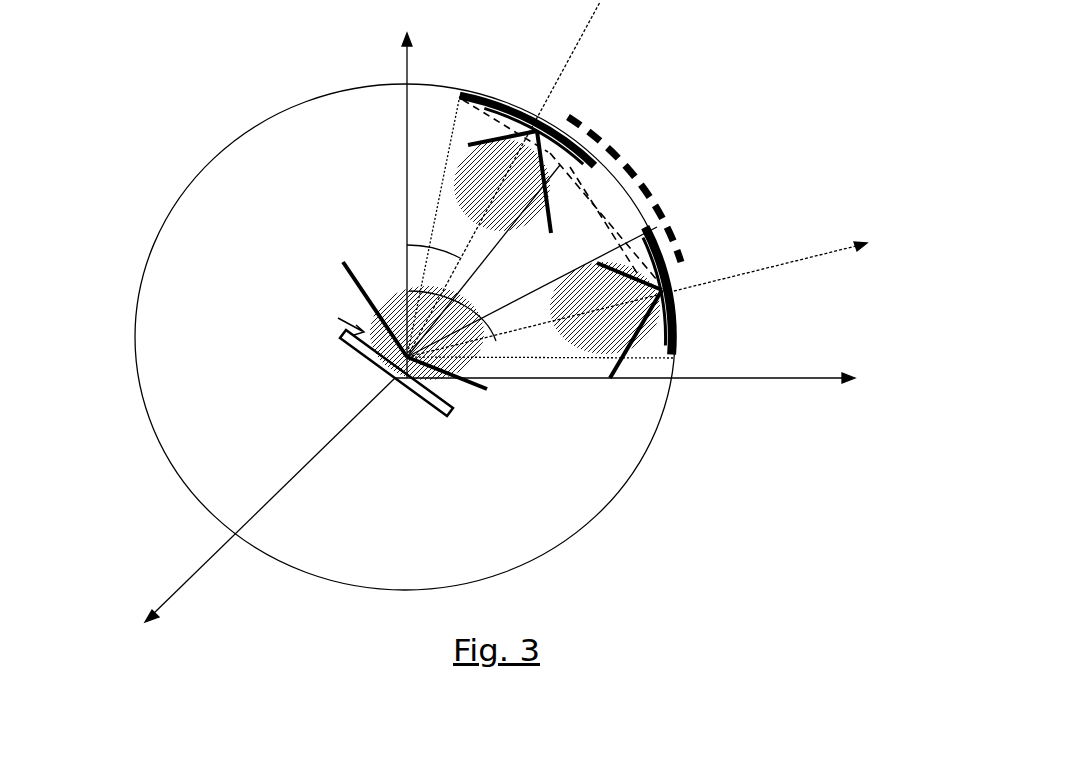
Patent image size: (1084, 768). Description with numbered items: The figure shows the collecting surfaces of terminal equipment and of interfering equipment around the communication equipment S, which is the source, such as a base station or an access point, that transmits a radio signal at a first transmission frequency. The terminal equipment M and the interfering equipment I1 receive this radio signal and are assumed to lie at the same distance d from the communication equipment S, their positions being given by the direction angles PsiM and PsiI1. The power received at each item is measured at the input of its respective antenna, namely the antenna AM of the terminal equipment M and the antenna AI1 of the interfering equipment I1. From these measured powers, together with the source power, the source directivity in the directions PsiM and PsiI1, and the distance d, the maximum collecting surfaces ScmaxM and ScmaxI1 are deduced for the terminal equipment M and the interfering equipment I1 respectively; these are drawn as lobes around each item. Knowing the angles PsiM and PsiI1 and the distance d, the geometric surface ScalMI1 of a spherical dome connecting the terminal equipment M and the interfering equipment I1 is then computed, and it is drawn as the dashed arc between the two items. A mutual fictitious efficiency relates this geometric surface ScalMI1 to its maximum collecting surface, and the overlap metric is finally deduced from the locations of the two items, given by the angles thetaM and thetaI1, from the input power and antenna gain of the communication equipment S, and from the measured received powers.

The communication equipment S is at (395, 339).
The terminal equipment M is at (531, 153).
The interfering equipment I1 is at (662, 289).
The distance d is at (590, 216).
The antenna of terminal equipment M AM is at (475, 147).
The antenna of interfering equipment I1 AI1 is at (607, 350).
The maximum collecting surface of terminal equipment M ScmaxM is at (460, 99).
The maximum collecting surface of interfering equipment I1 ScmaxI1 is at (673, 350).
The geometric surface of spherical dome ScalMI1 is at (648, 178).
The angle of terminal equipment M thetaM is at (433, 231).
The angle of interfering equipment I1 thetaI1 is at (464, 316).
The direction angle of terminal equipment M PsiM is at (503, 179).
The direction angle of interfering equipment I1 PsiI1 is at (637, 299).